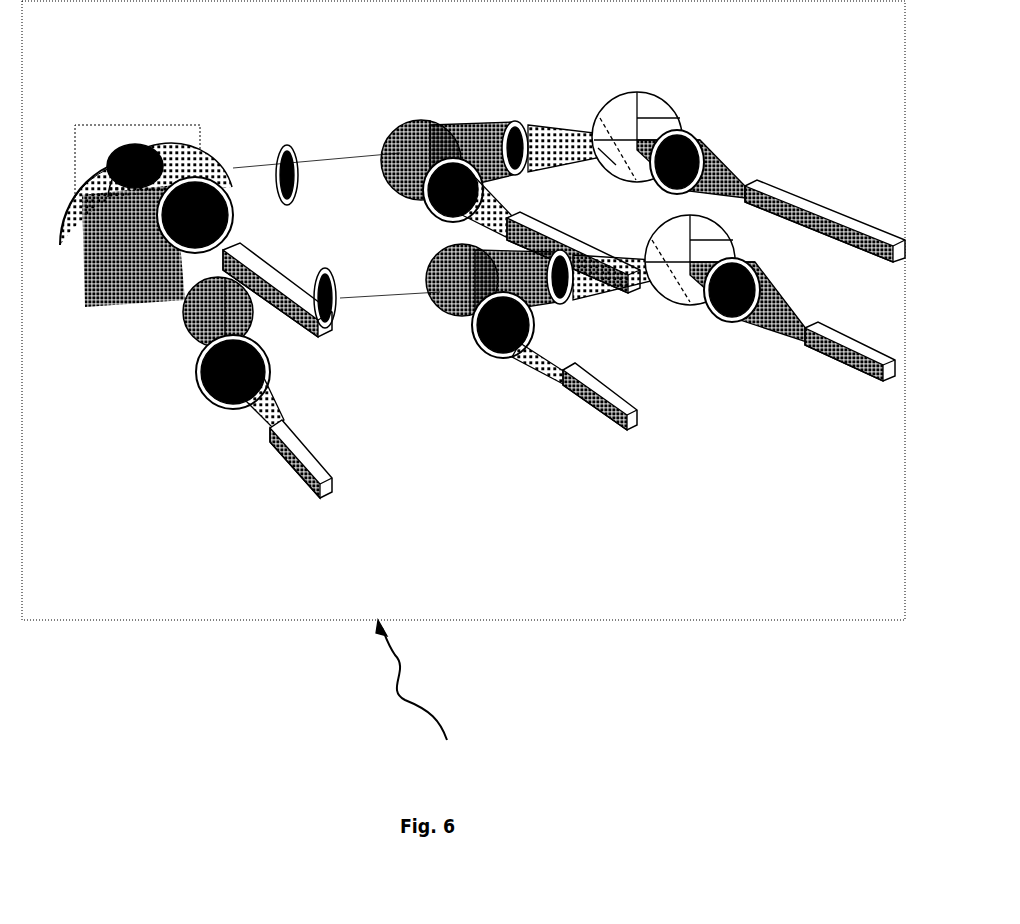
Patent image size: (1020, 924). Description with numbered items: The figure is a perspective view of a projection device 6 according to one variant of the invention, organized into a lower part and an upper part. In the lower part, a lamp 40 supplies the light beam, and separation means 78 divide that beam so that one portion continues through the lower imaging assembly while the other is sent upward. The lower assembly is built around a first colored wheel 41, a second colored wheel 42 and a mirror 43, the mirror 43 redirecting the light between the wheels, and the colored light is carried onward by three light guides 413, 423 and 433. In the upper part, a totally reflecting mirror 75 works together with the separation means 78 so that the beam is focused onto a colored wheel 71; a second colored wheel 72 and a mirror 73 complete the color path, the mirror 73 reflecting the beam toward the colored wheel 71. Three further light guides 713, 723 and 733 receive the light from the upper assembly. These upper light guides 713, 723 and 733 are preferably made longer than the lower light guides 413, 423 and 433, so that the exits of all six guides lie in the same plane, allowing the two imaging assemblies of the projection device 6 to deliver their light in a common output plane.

The projection device 6 is at (414, 696).
The lamp 40 is at (70, 207).
The first colored wheel 41 is at (187, 348).
The second colored wheel 42 is at (468, 333).
The mirror 43 is at (712, 322).
The colored wheel 71 is at (203, 143).
The colored wheel 72 is at (435, 118).
The mirror 73 is at (637, 95).
The totally reflecting mirror 75 is at (137, 118).
The separation means 78 is at (110, 307).
The light guide 413 is at (320, 470).
The light guide 423 is at (628, 427).
The light guide 433 is at (865, 372).
The light guide 713 is at (313, 332).
The light guide 723 is at (608, 287).
The light guide 733 is at (860, 215).